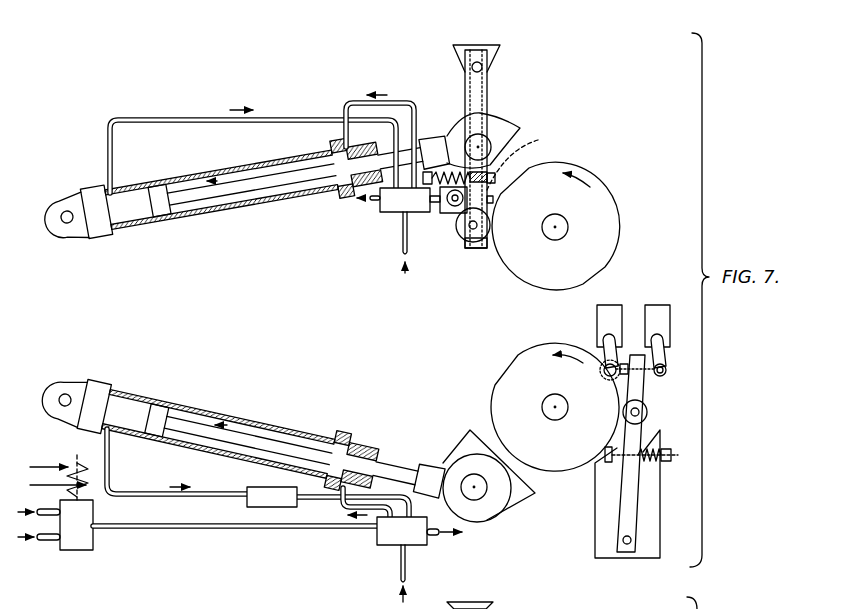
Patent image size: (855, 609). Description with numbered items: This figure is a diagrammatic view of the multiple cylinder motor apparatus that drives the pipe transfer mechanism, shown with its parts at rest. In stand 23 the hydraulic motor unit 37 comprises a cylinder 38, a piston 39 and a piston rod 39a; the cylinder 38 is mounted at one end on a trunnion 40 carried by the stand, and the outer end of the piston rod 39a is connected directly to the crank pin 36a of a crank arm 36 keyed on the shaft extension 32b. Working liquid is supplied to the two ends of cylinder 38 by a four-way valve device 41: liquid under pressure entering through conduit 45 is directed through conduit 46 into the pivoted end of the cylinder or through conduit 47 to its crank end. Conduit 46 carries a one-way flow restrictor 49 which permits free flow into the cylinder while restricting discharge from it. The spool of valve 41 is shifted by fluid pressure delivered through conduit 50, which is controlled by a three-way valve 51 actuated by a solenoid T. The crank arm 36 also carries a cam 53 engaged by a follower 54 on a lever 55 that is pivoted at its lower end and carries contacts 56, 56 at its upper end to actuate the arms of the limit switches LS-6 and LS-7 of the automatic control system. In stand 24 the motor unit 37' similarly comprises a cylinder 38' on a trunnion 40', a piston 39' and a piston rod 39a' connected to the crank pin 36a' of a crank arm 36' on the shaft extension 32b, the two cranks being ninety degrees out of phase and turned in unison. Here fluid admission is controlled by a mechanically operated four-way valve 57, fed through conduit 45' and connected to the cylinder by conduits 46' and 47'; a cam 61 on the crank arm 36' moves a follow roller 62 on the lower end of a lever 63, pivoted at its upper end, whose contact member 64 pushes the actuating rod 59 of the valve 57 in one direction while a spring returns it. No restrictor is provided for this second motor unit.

The conduit 47' is at (253, 131).
The conduit 46' is at (375, 119).
The crank pin 36a' is at (458, 119).
The lever 63 is at (480, 85).
The crank arm 36' is at (493, 129).
The contact member 64 is at (525, 160).
The cam 61 is at (608, 182).
The shaft extension 32b is at (568, 226).
The trunnion 40' is at (61, 202).
The piston 39' is at (152, 180).
The hydraulic motor unit 37' is at (209, 204).
The cylinder 38' is at (295, 203).
The piston rod 39a' is at (330, 191).
The stand 24 is at (332, 245).
The four-way valve 57 is at (385, 207).
The conduit 45' is at (387, 259).
The actuating rod 59 is at (450, 215).
The follow roller 62 is at (493, 240).
The limit switch LS-7 is at (611, 313).
The limit switch LS-6 is at (657, 313).
The cam 53 is at (533, 343).
The contacts 56 is at (608, 375).
The follower 54 is at (648, 412).
The lever 55 is at (632, 485).
The crank arm 36 is at (474, 459).
The crank pin 36a is at (494, 513).
The trunnion 40 is at (61, 389).
The piston 39 is at (154, 397).
The cylinder 38 is at (291, 427).
The hydraulic motor unit 37 is at (206, 421).
The piston rod 39a is at (334, 436).
The solenoid T is at (70, 460).
The conduit 46 is at (258, 473).
The one-way flow restrictor 49 is at (253, 487).
The conduit 47 is at (345, 506).
The conduit 50 is at (207, 528).
The three-way valve 51 is at (82, 542).
The stand 23 is at (318, 541).
The four-way valve device 41 is at (420, 545).
The conduit 45 is at (384, 577).